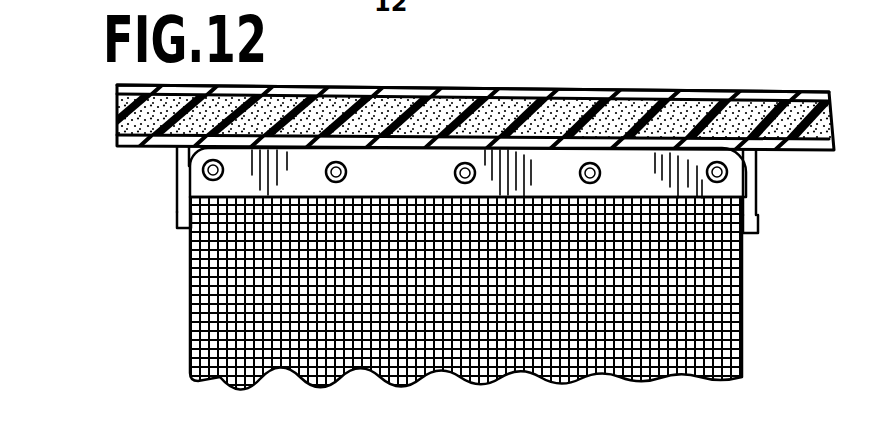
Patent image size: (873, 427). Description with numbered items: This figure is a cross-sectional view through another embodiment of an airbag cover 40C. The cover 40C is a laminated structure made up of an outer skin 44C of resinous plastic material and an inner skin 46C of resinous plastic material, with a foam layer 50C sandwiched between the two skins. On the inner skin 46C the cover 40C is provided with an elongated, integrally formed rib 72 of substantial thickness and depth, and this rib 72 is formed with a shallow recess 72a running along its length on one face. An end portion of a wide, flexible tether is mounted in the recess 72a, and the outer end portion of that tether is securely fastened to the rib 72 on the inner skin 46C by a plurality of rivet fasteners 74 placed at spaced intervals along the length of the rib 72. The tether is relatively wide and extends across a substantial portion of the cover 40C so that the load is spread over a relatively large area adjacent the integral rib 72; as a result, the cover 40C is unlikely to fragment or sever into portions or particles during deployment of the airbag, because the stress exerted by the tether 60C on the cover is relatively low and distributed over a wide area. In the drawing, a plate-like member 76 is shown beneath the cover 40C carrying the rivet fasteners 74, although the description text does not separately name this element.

The cover 40C is at (572, 86).
The outer skin 44C is at (708, 91).
The foam layer 50C is at (118, 112).
The inner skin 46C is at (148, 148).
The mounting plate 76 is at (398, 167).
The rivet fasteners 74 is at (215, 168).
The rib 72 is at (758, 170).
The recess 72a is at (175, 197).
The tether 60C is at (682, 312).